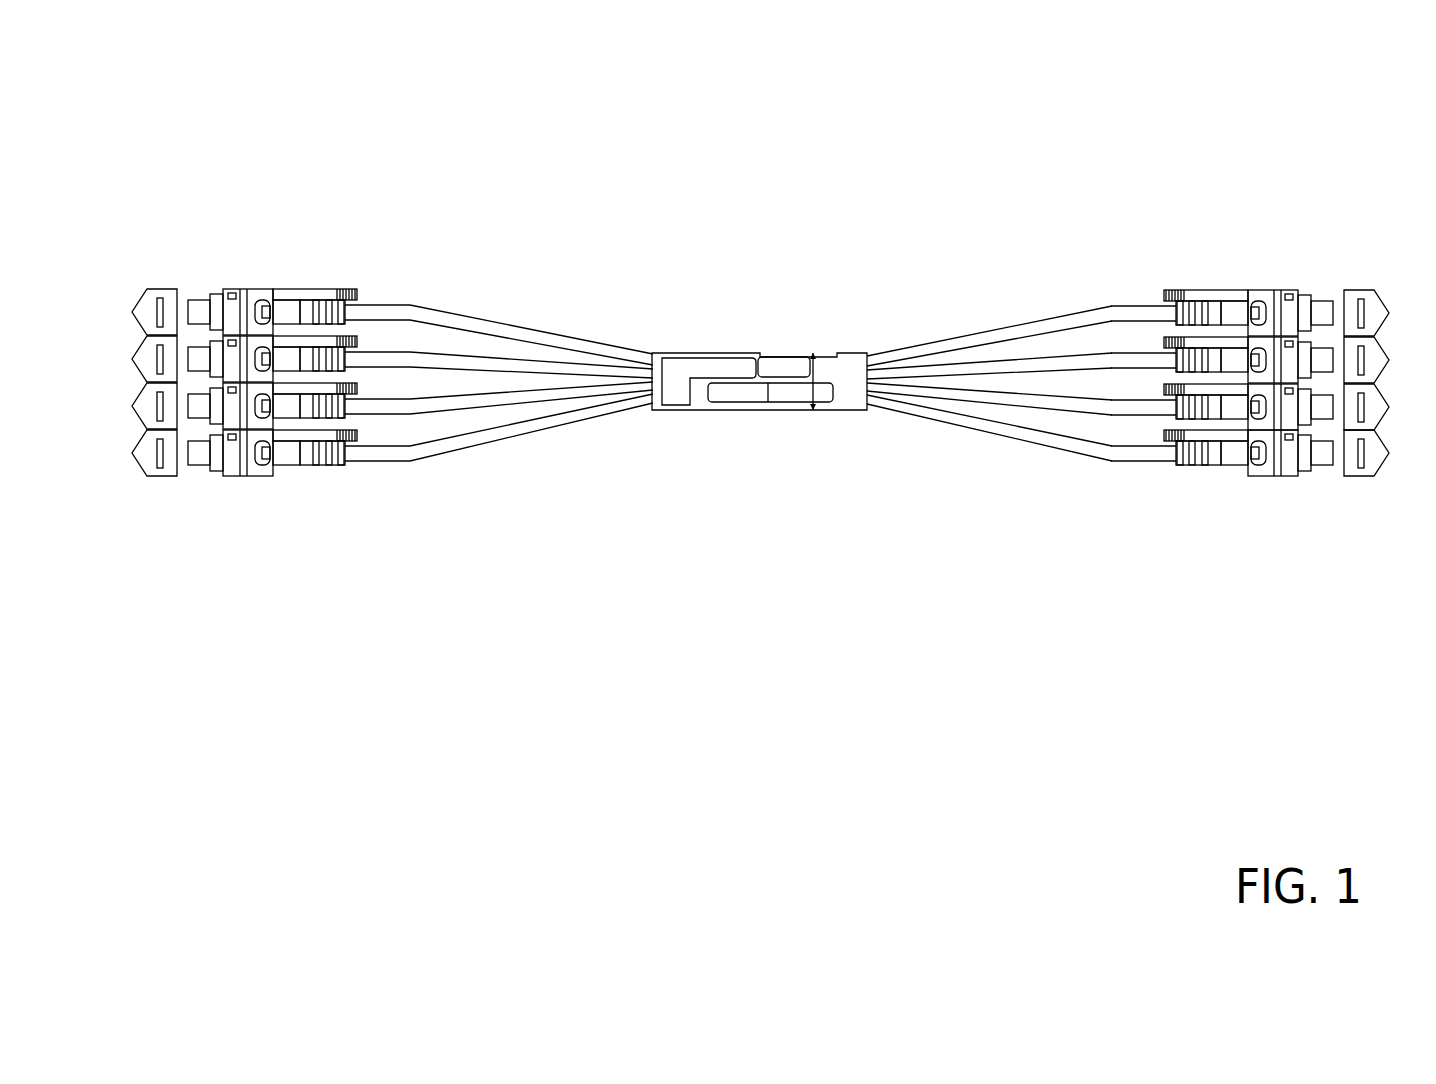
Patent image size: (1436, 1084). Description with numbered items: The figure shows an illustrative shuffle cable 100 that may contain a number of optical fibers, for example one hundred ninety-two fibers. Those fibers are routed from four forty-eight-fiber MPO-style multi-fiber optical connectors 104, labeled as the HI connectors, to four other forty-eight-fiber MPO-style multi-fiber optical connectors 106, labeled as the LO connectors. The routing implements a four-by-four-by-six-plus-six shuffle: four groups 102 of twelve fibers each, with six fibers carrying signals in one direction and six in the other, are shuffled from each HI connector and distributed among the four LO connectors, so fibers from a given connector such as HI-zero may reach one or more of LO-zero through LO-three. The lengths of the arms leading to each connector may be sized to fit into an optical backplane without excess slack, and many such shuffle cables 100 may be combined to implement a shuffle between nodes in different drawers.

The shuffle cable 100 is at (743, 200).
The groups of twelve fibers 102 is at (1073, 313).
The 48-fiber MPO-style multi-fiber optical connectors 104 is at (1275, 291).
The 48-fiber MPO-style multi-fiber optical connectors 106 is at (260, 288).